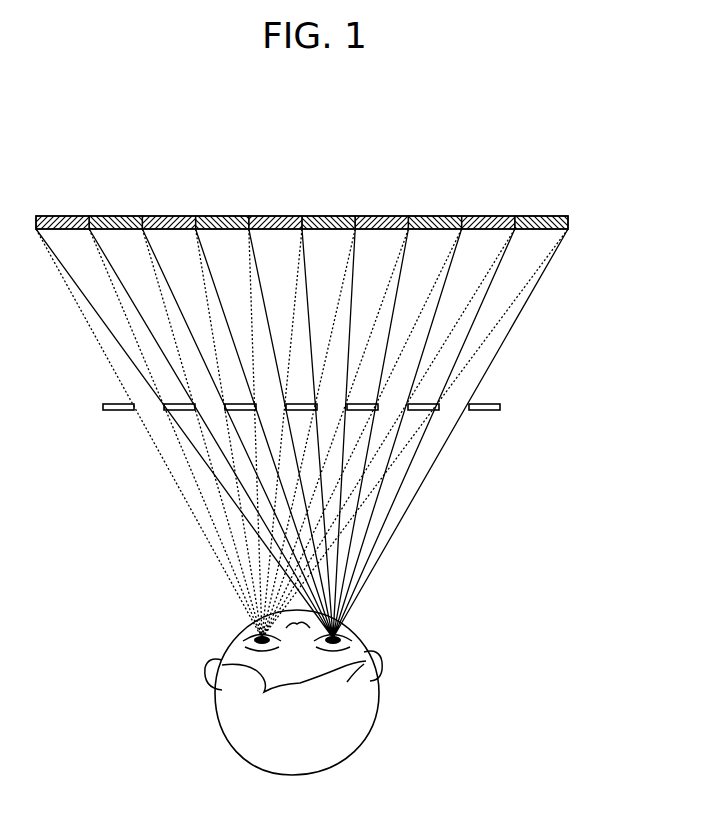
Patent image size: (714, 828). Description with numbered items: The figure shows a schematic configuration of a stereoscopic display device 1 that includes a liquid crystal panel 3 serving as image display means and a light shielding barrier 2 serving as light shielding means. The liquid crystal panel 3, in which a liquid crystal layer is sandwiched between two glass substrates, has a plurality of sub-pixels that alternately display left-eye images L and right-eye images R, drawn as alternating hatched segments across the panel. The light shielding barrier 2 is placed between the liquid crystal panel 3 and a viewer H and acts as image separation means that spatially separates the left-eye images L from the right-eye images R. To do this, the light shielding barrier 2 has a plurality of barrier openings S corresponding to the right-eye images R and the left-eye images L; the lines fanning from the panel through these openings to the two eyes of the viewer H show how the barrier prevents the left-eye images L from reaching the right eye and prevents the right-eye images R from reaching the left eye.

The stereoscopic display device 1 is at (548, 194).
The light shielding barrier 2 is at (499, 407).
The liquid crystal panel 3 is at (569, 220).
The left-eye image L is at (62, 217).
The right-eye image R is at (121, 217).
The barrier opening S is at (456, 411).
The viewer H is at (388, 721).